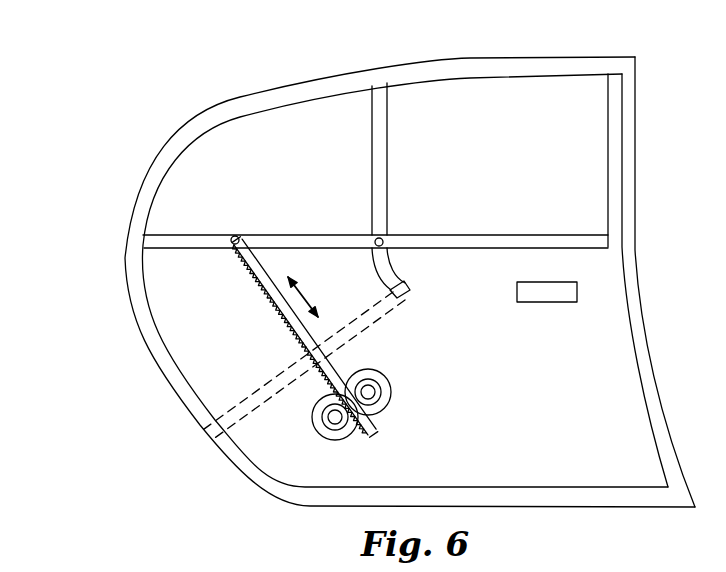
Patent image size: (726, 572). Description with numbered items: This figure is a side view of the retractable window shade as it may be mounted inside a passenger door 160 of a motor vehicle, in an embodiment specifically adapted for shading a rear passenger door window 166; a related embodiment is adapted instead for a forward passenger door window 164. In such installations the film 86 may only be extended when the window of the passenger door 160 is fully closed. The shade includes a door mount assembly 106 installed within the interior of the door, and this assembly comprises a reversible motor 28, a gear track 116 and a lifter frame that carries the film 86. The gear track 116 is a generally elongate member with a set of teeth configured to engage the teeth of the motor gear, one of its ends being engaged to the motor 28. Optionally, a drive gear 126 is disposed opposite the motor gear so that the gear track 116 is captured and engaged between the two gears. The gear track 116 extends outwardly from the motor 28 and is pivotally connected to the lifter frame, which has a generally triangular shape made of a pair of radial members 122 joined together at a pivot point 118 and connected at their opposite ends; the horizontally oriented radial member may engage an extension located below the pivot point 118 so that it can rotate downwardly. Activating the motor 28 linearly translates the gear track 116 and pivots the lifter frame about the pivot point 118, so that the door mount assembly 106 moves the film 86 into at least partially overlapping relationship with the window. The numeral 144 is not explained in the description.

The motor 28 is at (387, 380).
The film 86 is at (183, 238).
The door mount assembly 106 is at (373, 316).
The gear track 116 is at (378, 429).
The pivot point 118 is at (384, 240).
The radial members 122 is at (387, 108).
The drive gear 126 is at (331, 438).
The housing wall 144 is at (167, 243).
The passenger door 160 is at (530, 458).
The forward passenger door window 164 is at (486, 145).
The rear passenger door window 166 is at (277, 173).